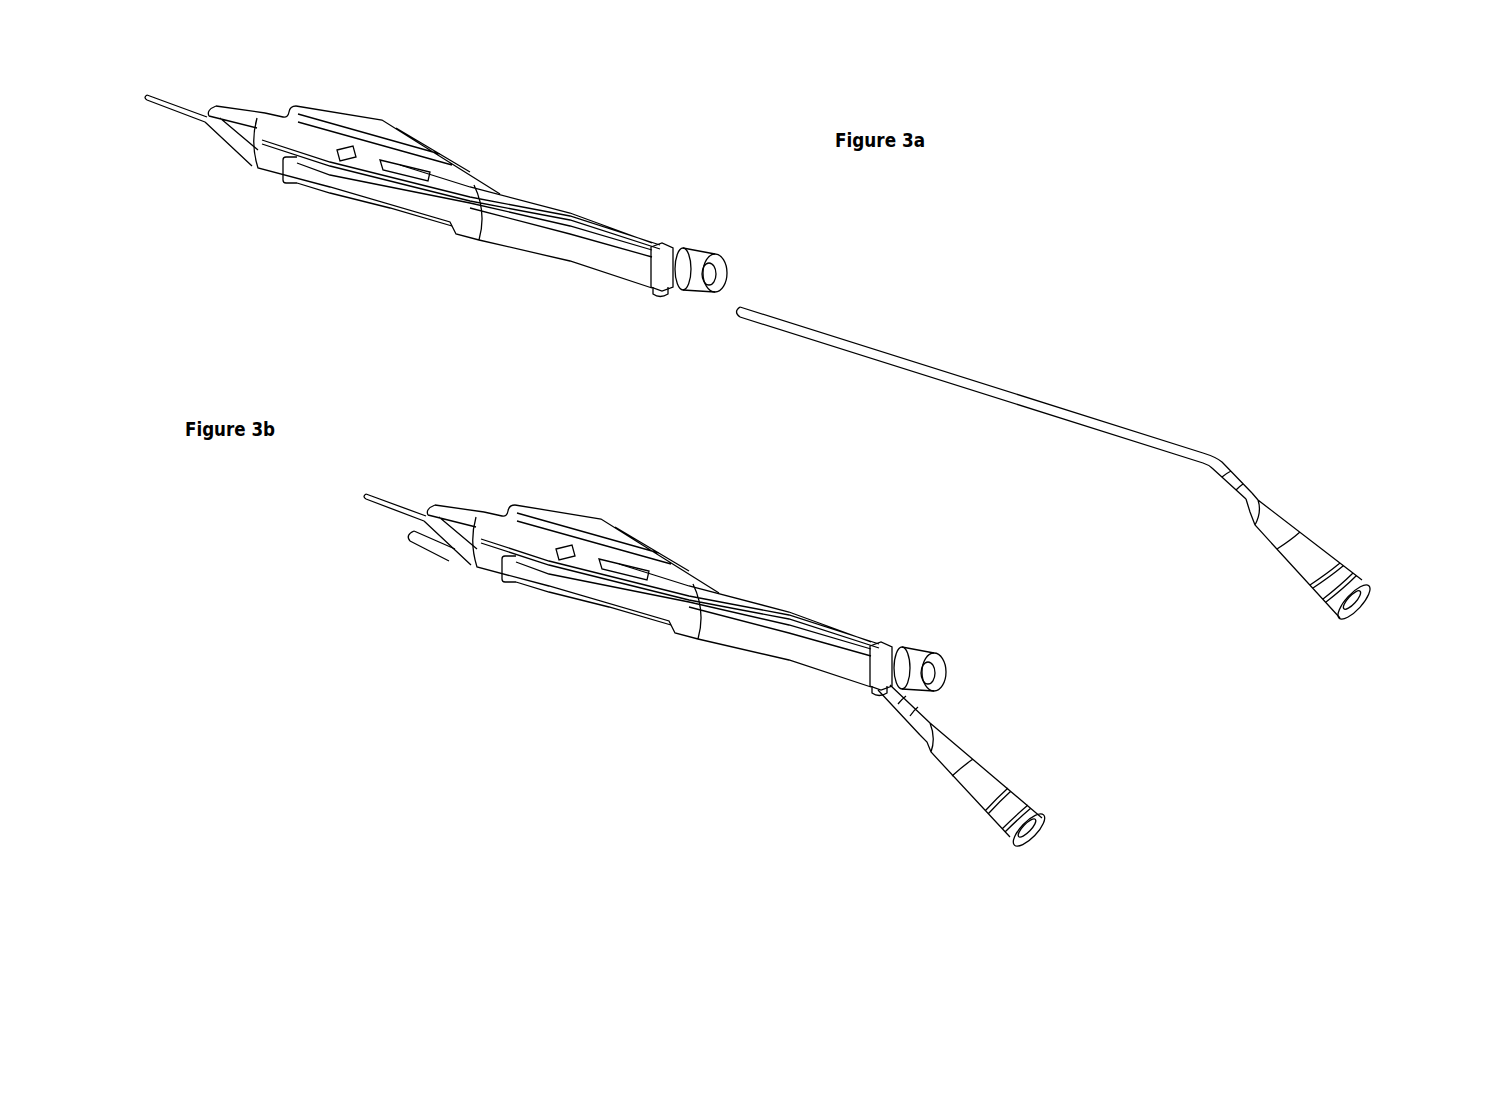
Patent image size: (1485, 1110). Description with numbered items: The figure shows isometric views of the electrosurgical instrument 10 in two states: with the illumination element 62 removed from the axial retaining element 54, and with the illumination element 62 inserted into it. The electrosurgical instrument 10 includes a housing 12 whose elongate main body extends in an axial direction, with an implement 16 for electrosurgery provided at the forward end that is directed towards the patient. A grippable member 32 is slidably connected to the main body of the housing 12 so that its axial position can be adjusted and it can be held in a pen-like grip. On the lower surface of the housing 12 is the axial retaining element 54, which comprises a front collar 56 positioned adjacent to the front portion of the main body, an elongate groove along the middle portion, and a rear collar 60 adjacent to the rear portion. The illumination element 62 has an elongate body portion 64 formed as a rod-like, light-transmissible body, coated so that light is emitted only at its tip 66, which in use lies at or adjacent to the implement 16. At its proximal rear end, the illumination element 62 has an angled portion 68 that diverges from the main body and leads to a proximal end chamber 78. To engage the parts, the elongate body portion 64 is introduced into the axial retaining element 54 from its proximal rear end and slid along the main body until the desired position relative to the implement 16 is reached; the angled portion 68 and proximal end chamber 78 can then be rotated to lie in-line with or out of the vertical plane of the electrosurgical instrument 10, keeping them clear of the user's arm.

In FIG. 3A, the electrosurgical instrument 10 is at (1043, 245).
In FIG. 3B, the electrosurgical instrument 10 is at (968, 590).
In FIG. 3A, the housing 12 is at (371, 227).
In FIG. 3B, the housing 12 is at (576, 647).
In FIG. 3A, the implement 16 is at (146, 97).
In FIG. 3B, the implement 16 is at (362, 497).
In FIG. 3A, the grippable member 32 is at (412, 158).
In FIG. 3B, the grippable member 32 is at (658, 565).
In FIG. 3A, the axial retaining element 54 is at (427, 229).
In FIG. 3B, the axial retaining element 54 is at (738, 658).
In FIG. 3A, the front collar 56 is at (251, 168).
In FIG. 3B, the front collar 56 is at (472, 570).
In FIG. 3A, the rear collar 60 is at (646, 299).
In FIG. 3B, the rear collar 60 is at (870, 687).
In FIG. 3A, the illumination element 62 is at (1328, 514).
In FIG. 3B, the illumination element 62 is at (1000, 759).
In FIG. 3A, the elongate body portion 64 is at (905, 354).
In FIG. 3B, the elongate body portion 64 is at (440, 557).
In FIG. 3A, the tip 66 is at (729, 318).
In FIG. 3B, the tip 66 is at (397, 538).
In FIG. 3A, the angled portion 68 is at (1243, 468).
In FIG. 3B, the angled portion 68 is at (908, 700).
In FIG. 3A, the proximal end chamber 78 is at (1366, 588).
In FIG. 3B, the proximal end chamber 78 is at (1036, 806).